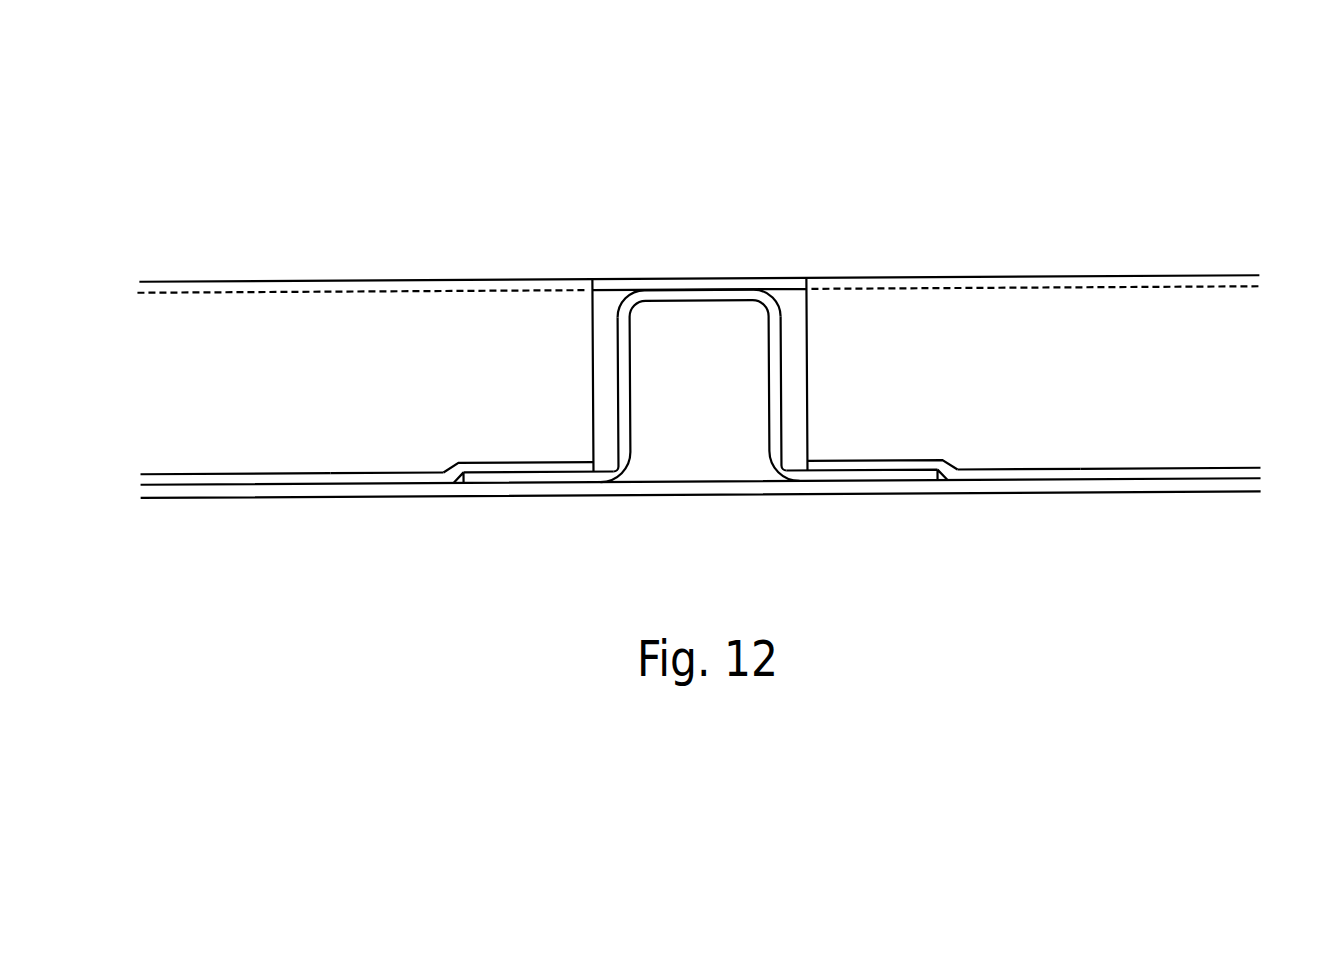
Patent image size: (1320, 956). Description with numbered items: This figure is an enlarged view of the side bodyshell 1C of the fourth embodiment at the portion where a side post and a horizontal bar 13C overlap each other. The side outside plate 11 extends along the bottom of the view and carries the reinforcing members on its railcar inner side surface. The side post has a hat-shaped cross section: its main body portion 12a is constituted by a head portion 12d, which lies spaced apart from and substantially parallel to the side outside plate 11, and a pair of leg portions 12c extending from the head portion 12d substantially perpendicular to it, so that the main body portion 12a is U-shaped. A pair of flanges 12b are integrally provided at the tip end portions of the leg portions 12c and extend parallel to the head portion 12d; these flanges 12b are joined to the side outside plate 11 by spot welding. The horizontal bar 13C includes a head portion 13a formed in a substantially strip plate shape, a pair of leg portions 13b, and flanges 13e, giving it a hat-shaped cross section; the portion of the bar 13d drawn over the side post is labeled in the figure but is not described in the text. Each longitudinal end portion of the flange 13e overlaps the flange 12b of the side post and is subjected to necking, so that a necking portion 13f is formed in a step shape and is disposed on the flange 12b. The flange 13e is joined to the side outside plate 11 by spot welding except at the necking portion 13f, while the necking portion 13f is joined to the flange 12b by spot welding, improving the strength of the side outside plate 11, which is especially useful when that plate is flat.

The side bodyshell 1C is at (1077, 144).
The side outside plate 11 is at (1208, 487).
The main body portion 12a is at (695, 298).
The flange 12b is at (483, 480).
The leg portion 12c is at (625, 362).
The head portion 12d is at (738, 296).
The head portion 13a is at (702, 279).
The leg portion 13b is at (287, 445).
The horizontal bar 13C is at (1070, 300).
The raised portion of cover sheet 13d is at (640, 279).
The flange 13e is at (385, 477).
The necking portion 13f is at (535, 465).